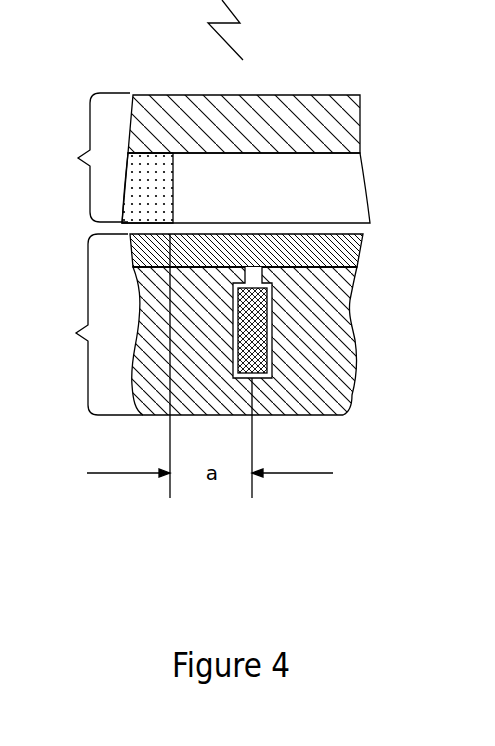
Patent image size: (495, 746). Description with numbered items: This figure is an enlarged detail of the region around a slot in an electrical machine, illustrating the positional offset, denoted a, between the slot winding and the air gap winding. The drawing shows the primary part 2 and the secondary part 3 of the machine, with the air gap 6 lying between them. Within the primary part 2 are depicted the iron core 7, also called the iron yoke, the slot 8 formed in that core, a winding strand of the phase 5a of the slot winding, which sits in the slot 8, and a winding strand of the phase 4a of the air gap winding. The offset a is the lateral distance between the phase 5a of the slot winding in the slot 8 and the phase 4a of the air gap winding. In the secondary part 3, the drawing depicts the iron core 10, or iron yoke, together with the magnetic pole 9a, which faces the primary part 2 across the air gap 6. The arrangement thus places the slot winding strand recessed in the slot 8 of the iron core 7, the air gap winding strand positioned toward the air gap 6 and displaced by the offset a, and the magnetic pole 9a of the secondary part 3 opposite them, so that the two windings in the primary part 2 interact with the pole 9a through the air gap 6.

The primary part 2 is at (97, 324).
The secondary part 3 is at (91, 157).
The phase of the air gap winding 4a is at (357, 267).
The phase of the slot winding 5a is at (272, 310).
The air gap 6 is at (285, 228).
The iron core 7 is at (302, 340).
The slot 8 is at (303, 346).
The magnetic pole 9a is at (275, 185).
The iron core 10 is at (300, 130).